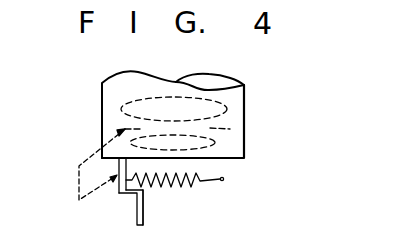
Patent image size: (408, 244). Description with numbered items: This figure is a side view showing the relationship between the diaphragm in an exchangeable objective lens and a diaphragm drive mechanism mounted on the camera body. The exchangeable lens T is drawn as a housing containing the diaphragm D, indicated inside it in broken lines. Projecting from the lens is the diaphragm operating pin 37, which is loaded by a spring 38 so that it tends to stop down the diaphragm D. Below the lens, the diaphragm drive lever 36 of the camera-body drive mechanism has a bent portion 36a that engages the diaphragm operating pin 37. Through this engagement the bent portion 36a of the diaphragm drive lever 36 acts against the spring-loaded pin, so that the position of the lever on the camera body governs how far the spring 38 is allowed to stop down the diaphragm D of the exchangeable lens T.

The exchangeable lens T is at (102, 91).
The diaphragm D is at (230, 129).
The diaphragm operating pin 37 is at (118, 191).
The diaphragm drive lever 36 is at (137, 212).
The bent portion 36a is at (144, 191).
The spring 38 is at (199, 182).